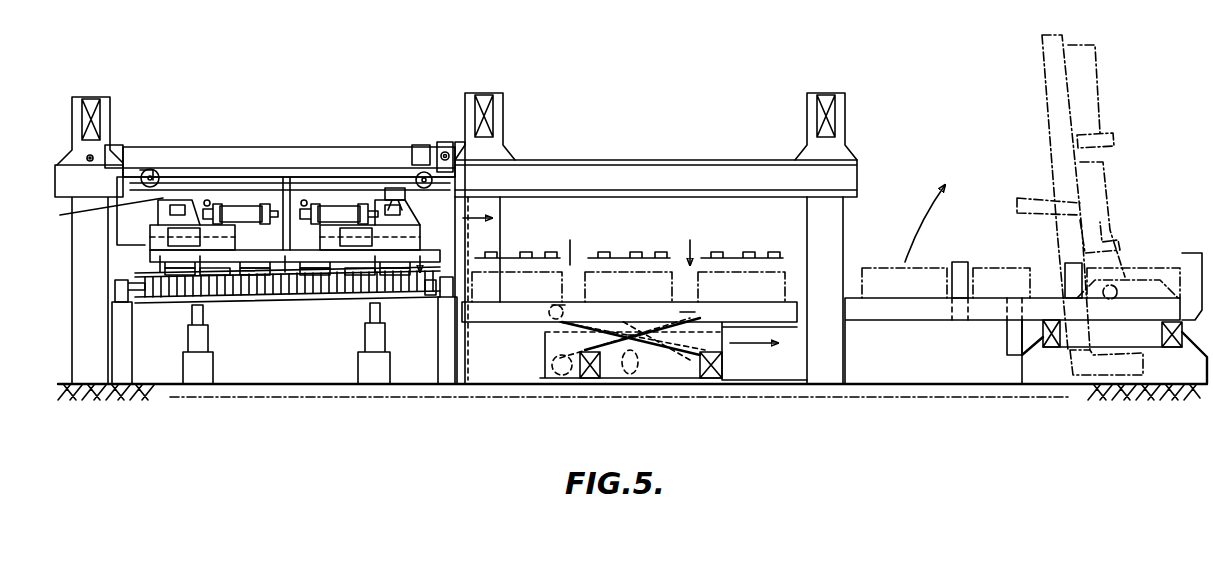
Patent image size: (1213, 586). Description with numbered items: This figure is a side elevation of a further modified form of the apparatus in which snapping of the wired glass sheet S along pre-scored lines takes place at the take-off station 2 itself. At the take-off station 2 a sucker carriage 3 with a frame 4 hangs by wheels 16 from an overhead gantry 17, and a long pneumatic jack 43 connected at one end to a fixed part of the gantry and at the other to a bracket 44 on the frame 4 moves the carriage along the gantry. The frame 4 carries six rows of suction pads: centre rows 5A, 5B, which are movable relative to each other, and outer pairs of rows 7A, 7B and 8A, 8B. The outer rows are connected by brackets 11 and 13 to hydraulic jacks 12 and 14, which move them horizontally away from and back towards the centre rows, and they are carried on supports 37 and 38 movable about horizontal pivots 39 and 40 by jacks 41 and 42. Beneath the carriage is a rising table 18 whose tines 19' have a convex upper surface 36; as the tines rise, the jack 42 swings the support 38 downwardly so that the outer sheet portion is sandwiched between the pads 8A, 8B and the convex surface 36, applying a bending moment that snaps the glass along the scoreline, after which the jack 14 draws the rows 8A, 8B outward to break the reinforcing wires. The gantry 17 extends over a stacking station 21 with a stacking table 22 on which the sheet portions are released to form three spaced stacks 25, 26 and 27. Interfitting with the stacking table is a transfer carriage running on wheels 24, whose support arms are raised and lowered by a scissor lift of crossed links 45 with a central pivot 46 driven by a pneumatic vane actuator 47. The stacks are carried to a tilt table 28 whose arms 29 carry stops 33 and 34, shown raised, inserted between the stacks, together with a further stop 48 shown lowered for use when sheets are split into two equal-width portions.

The take-off station 2 is at (172, 111).
The sucker carriage 3 is at (288, 165).
The frame 4 is at (338, 182).
The centre row of suction pads 5A is at (292, 272).
The centre row of suction pads 5B is at (325, 277).
The outer row of suction pads 7A is at (173, 270).
The outer row of suction pads 7B is at (212, 272).
The outer row of suction pads 8A is at (357, 278).
The outer row of suction pads 8B is at (395, 272).
The bracket 11 is at (192, 212).
The hydraulic jack 12 is at (235, 210).
The bracket 13 is at (385, 212).
The hydraulic jack 14 is at (325, 210).
The wheels 16 is at (152, 168).
The overhead gantry 17 is at (598, 160).
The rising table 18 is at (288, 305).
The tines 19' is at (148, 343).
The stacking station 21 is at (672, 158).
The stacking table 22 is at (793, 302).
The wheels 24 is at (540, 365).
The stack 25 is at (532, 240).
The stack 26 is at (607, 240).
The stack 27 is at (752, 240).
The tilt table 28 is at (1000, 386).
The arms 29 is at (890, 310).
The retractable stop 33 is at (951, 262).
The retractable stop 34 is at (1062, 270).
The convex upper surface 36 is at (428, 300).
The support 37 is at (152, 252).
The support 38 is at (428, 246).
The horizontal pivot 39 is at (245, 300).
The horizontal pivot 40 is at (350, 295).
The hydraulic jack 41 is at (99, 214).
The hydraulic jack 42 is at (395, 188).
The pneumatic jack 43 is at (203, 162).
The bracket 44 is at (450, 124).
The crossed links 45 is at (586, 310).
The central pivot 46 is at (633, 340).
The pneumatic vane actuator 47 is at (648, 376).
The stop 48 is at (1008, 340).
The wired glass sheet S is at (182, 292).